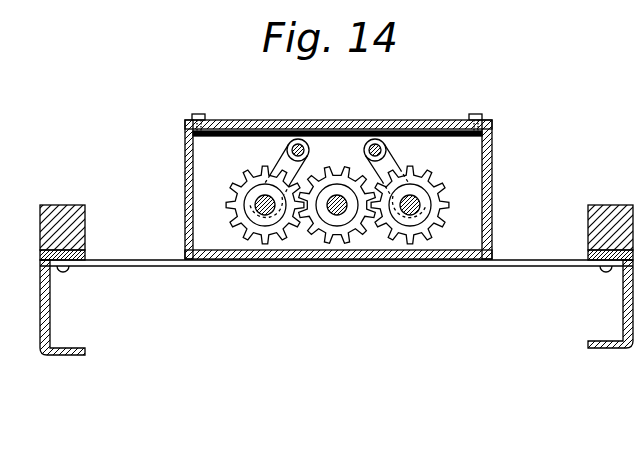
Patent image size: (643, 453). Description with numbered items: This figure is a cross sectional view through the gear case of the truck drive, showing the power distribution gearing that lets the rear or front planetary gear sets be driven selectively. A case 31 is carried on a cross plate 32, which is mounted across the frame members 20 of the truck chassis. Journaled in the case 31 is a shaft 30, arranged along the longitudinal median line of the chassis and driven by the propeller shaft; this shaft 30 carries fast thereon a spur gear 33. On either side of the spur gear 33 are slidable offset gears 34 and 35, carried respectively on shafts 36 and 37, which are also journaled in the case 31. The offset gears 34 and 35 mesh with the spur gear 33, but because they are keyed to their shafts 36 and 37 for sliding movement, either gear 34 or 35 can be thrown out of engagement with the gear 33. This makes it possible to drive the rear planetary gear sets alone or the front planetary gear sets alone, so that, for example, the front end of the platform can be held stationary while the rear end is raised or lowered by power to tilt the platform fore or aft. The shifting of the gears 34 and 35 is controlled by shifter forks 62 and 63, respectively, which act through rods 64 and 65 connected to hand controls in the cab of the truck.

The frame members 20 is at (52, 313).
The shaft 30 is at (337, 207).
The case 31 is at (492, 183).
The cross plate 32 is at (551, 267).
The spur gear 33 is at (350, 223).
The slidable offset gear 34 is at (250, 235).
The slidable offset gear 35 is at (410, 208).
The shaft 36 is at (267, 208).
The shaft 37 is at (420, 215).
The shifter fork 62 is at (283, 165).
The shifter fork 63 is at (393, 187).
The rod 64 is at (303, 141).
The rod 65 is at (378, 140).